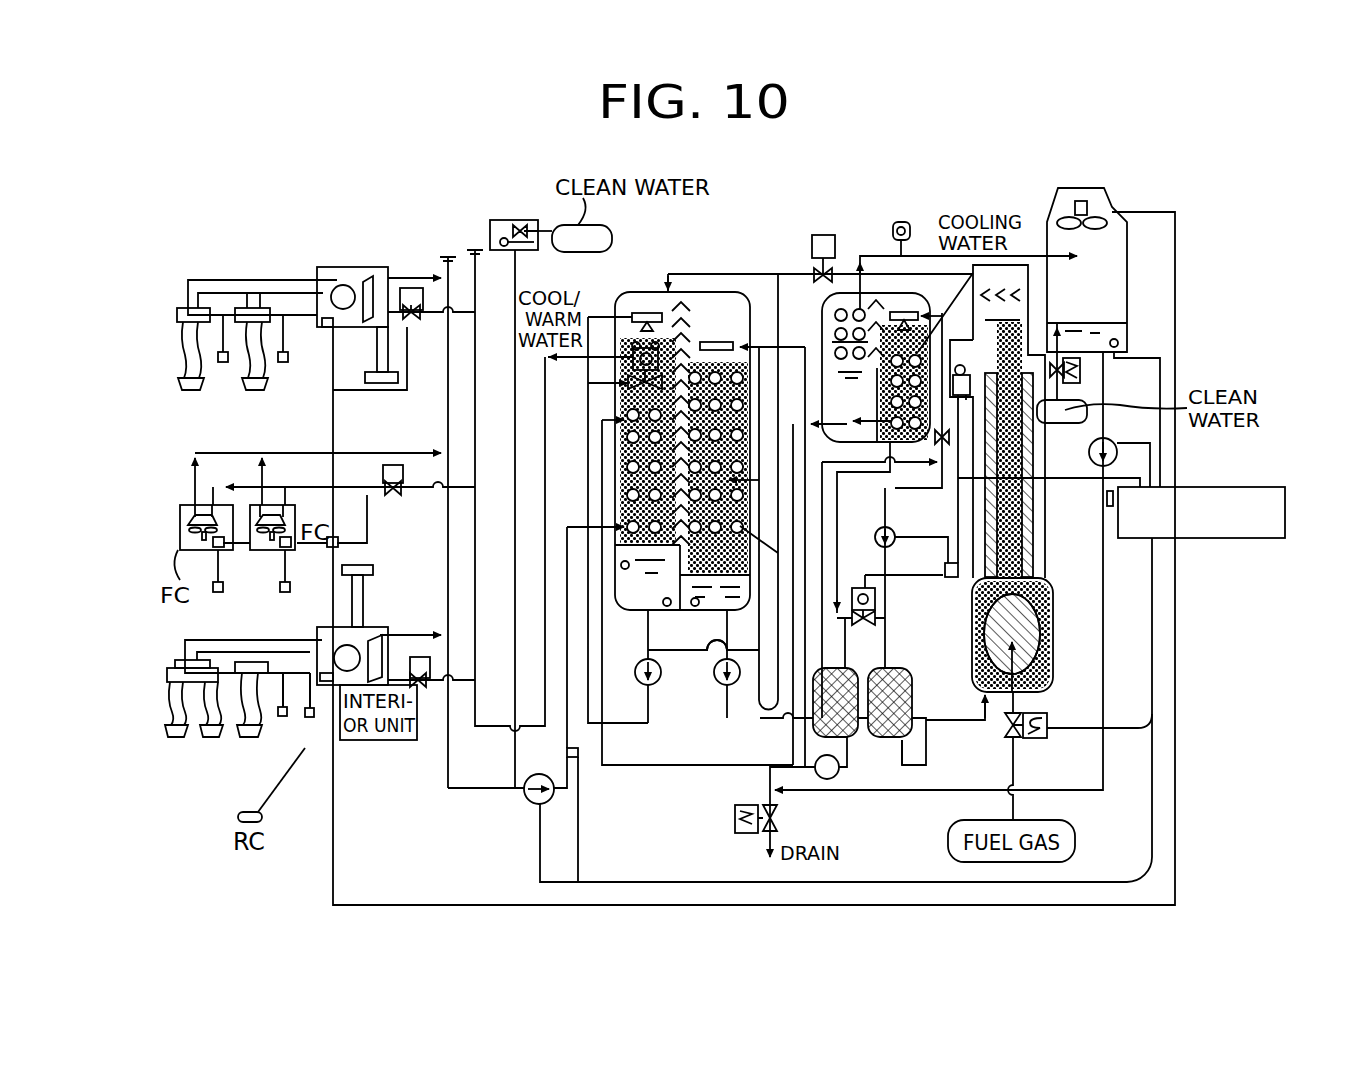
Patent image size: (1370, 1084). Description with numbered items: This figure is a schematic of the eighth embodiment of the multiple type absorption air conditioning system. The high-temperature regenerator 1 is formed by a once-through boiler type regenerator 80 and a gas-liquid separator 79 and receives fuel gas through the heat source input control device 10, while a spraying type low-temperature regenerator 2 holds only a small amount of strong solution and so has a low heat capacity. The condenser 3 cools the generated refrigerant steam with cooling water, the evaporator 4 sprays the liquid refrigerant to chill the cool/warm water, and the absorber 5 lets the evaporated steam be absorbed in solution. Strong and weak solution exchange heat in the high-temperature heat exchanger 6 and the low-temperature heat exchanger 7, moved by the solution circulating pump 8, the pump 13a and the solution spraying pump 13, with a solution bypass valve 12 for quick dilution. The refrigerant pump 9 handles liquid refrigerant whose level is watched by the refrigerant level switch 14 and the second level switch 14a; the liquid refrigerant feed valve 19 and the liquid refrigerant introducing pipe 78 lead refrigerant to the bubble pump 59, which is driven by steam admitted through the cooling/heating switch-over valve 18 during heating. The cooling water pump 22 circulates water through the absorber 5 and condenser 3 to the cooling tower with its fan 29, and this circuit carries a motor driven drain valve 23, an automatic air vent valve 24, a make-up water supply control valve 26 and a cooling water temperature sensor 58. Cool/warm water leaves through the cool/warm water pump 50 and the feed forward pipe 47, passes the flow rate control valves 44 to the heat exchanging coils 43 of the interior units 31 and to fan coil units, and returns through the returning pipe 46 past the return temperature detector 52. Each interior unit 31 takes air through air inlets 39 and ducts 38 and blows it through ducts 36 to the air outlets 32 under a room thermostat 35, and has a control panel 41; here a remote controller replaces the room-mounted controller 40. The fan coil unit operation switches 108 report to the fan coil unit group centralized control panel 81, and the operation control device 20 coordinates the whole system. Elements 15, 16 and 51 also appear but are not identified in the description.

The high-temperature regenerator 1 is at (1045, 585).
The low-temperature regenerator 2 is at (905, 300).
The condenser 3 is at (825, 300).
The evaporator 4 is at (640, 292).
The absorber 5 is at (745, 320).
The high-temperature heat exchanger 6 is at (900, 668).
The low-temperature heat exchanger 7 is at (850, 668).
The solution circulating pump 8 is at (722, 686).
The refrigerant pump 9 is at (640, 685).
The heat source input control device 10 is at (1035, 738).
The solution bypass valve 12 is at (855, 588).
The solution spraying pump 13 is at (839, 770).
The pump 13a is at (893, 530).
The refrigerant level switch 14 is at (667, 606).
The second liquid refrigerant level switch 14a is at (625, 569).
The level sensor 15 is at (695, 606).
The sensor 16 is at (962, 365).
The cooling/heating switch-over valve 18 is at (825, 235).
The liquid refrigerant feed control valve 19 is at (628, 384).
The operation control device 20 is at (1285, 512).
The cooling water pump 22 is at (1108, 440).
The motor driven drain valve 23 is at (777, 812).
The automatic air vent valve 24 is at (898, 222).
The motor driven make-up water supply control valve 26 is at (1080, 370).
The fan 29 is at (1082, 201).
The interior unit 31 is at (357, 265).
The air outlet 32 is at (177, 737).
The room thermostat 35 is at (280, 718).
The duct 36 is at (270, 280).
The duct 38 is at (390, 352).
The air inlet 39 is at (382, 385).
The controller 40 is at (223, 362).
The control panel 41 is at (325, 328).
The heat exchanging coil 43 is at (450, 660).
The cool/warm water flow rate control valve 44 is at (420, 318).
The returning cool/warm water pipe 46 is at (462, 790).
The feed forward cool/warm water pipe 47 is at (478, 555).
The cool/warm water pump 50 is at (533, 804).
The water supply unit 51 is at (505, 220).
The return cool/warm water temperature detector 52 is at (580, 758).
The cooling water temperature sensor 58 is at (1112, 508).
The bubble pump 59 is at (755, 525).
The liquid refrigerant introducing pipe 78 is at (690, 652).
The gas-liquid separator 79 is at (987, 320).
The once-through boiler type regenerator 80 is at (1033, 495).
The fan coil unit group centralized control panel 81 is at (336, 537).
The fan coil unit operation switch 108 is at (218, 592).